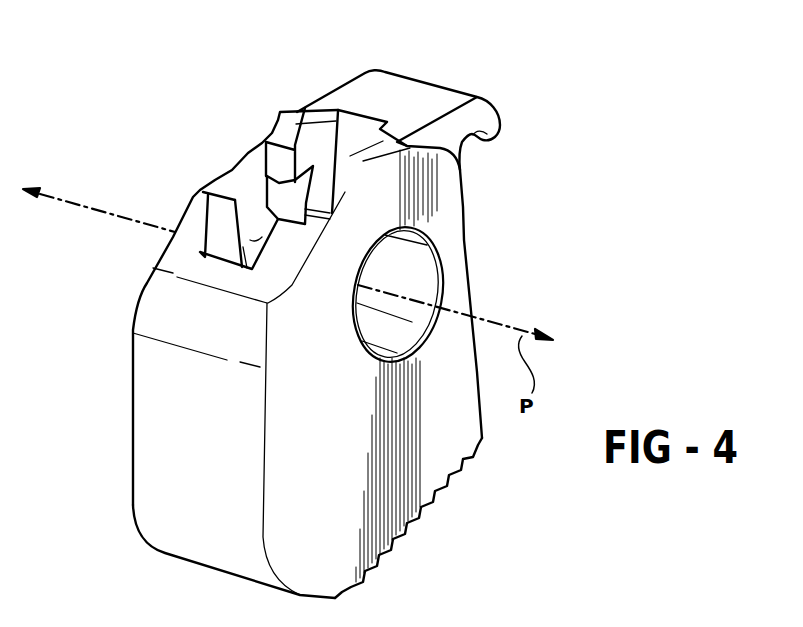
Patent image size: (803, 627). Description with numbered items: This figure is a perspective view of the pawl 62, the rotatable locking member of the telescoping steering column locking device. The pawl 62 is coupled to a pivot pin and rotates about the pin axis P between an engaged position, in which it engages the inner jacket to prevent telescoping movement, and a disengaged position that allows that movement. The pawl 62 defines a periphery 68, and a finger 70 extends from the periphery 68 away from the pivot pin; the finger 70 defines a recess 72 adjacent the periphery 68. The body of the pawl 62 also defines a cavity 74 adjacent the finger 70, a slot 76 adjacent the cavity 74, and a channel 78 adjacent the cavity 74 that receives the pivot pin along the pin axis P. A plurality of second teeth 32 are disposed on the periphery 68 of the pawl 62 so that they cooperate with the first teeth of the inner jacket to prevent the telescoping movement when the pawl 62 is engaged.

The second teeth 32 is at (462, 470).
The pawl 62 is at (462, 204).
The periphery 68 is at (146, 446).
The finger 70 is at (447, 93).
The recess 72 is at (503, 140).
The cavity 74 is at (330, 130).
The slot 76 is at (247, 190).
The channel 78 is at (222, 243).